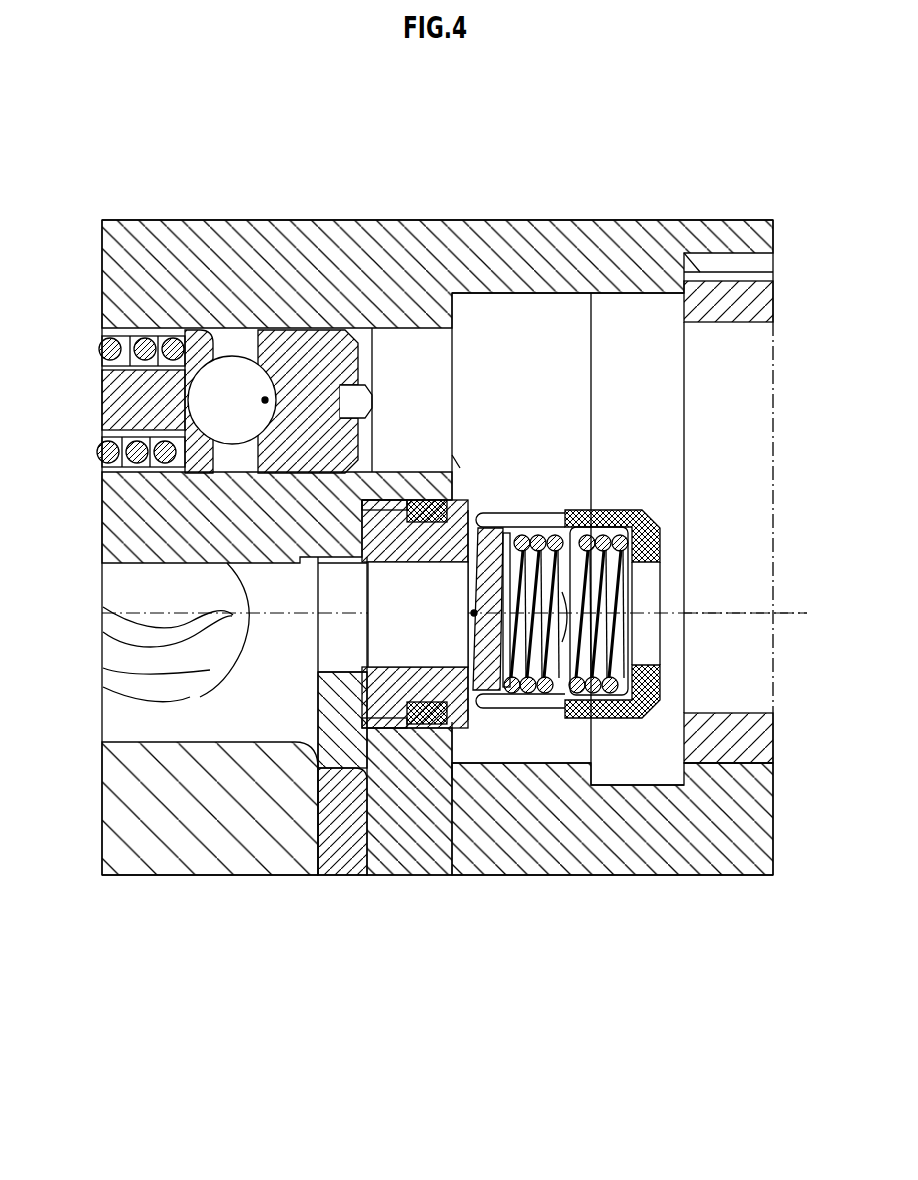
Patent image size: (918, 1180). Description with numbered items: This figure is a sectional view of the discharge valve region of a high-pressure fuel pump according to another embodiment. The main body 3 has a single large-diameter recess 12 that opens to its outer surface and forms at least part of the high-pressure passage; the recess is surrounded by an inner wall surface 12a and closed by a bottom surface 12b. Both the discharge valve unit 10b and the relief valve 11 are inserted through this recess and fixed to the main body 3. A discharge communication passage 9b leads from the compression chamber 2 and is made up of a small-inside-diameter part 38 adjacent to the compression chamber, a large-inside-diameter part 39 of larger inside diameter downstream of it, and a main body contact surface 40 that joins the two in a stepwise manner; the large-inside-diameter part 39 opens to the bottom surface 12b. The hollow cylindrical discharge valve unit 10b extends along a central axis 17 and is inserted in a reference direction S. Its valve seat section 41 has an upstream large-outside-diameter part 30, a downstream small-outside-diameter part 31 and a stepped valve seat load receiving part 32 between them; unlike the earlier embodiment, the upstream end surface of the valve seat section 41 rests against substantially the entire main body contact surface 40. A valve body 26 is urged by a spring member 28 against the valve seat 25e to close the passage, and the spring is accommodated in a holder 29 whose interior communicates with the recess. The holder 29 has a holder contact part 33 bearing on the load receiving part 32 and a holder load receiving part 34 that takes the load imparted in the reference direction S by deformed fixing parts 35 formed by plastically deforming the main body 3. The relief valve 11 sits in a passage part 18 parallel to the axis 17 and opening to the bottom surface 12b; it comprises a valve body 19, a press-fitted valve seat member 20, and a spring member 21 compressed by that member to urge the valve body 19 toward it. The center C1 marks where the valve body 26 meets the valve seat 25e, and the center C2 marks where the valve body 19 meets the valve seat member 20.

The compression chamber 2 is at (283, 597).
The main body 3 is at (303, 332).
The discharge communication passage 9b is at (195, 719).
The discharge valve unit 10b is at (567, 766).
The relief valve 11 is at (234, 269).
The large-diameter recess 12 is at (682, 746).
The inner wall surface 12a is at (647, 763).
The bottom surface 12b is at (457, 464).
The central axis 17 is at (783, 613).
The passage part 18 is at (102, 348).
The valve body 19 is at (213, 328).
The valve seat member 20 is at (252, 345).
The spring member 21 is at (140, 338).
The valve seat 25e is at (475, 708).
The valve body 26 is at (520, 693).
The spring member 28 is at (572, 698).
The holder 29 is at (597, 718).
The large-outside-diameter part 30 is at (388, 730).
The small-outside-diameter part 31 is at (447, 703).
The valve seat load receiving part 32 is at (417, 708).
The holder contact part 33 is at (392, 500).
The holder load receiving part 34 is at (432, 500).
The deformed fixing parts 35 is at (438, 472).
The small-inside-diameter part 38 is at (335, 658).
The large-inside-diameter part 39 is at (385, 716).
The main body contact surface 40 is at (372, 700).
The valve seat section 41 is at (506, 690).
The center C1 is at (478, 610).
The center C2 is at (265, 400).
The reference direction S is at (598, 101).